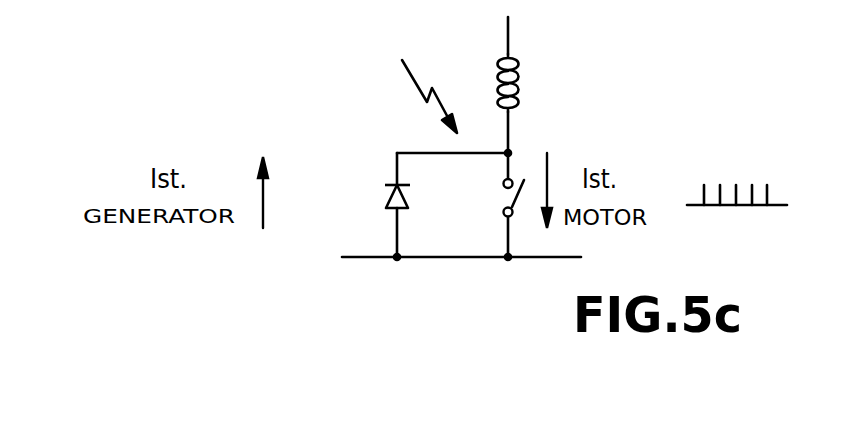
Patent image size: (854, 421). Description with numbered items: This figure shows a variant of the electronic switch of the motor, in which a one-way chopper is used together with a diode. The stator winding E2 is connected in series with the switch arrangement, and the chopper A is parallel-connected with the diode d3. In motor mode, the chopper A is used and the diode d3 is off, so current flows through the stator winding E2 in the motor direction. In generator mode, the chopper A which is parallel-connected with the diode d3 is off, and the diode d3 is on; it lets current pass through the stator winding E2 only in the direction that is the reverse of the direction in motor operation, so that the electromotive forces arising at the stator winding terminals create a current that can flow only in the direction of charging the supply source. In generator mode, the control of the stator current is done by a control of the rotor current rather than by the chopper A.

The stator winding E2 is at (567, 83).
The chopper A is at (388, 96).
The diode d3 is at (344, 200).